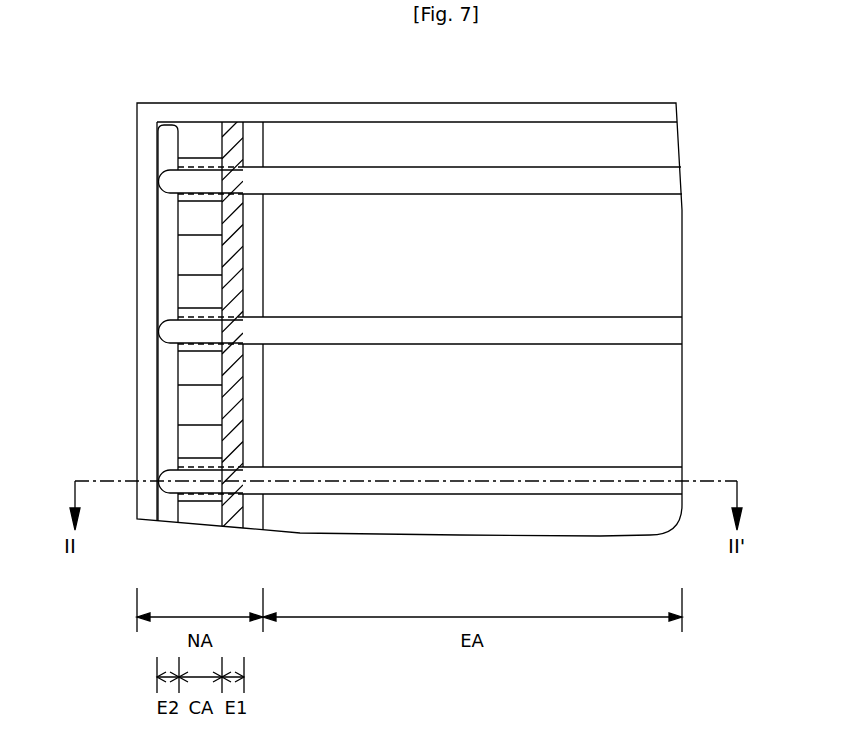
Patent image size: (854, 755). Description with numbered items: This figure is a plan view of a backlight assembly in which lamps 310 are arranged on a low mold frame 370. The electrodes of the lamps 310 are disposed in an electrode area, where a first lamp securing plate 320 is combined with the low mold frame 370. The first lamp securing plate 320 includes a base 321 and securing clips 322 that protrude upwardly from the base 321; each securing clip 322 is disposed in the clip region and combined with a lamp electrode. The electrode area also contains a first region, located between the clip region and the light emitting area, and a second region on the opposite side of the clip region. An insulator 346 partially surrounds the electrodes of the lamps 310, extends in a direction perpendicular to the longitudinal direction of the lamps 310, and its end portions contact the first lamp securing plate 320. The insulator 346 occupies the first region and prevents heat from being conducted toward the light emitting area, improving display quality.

The low mold frame 370 is at (510, 114).
The lamps 310 is at (679, 181).
The first lamp securing plate 320 is at (55, 190).
The base 321 is at (190, 258).
The securing clip 322 is at (186, 208).
The insulator 346 is at (230, 408).